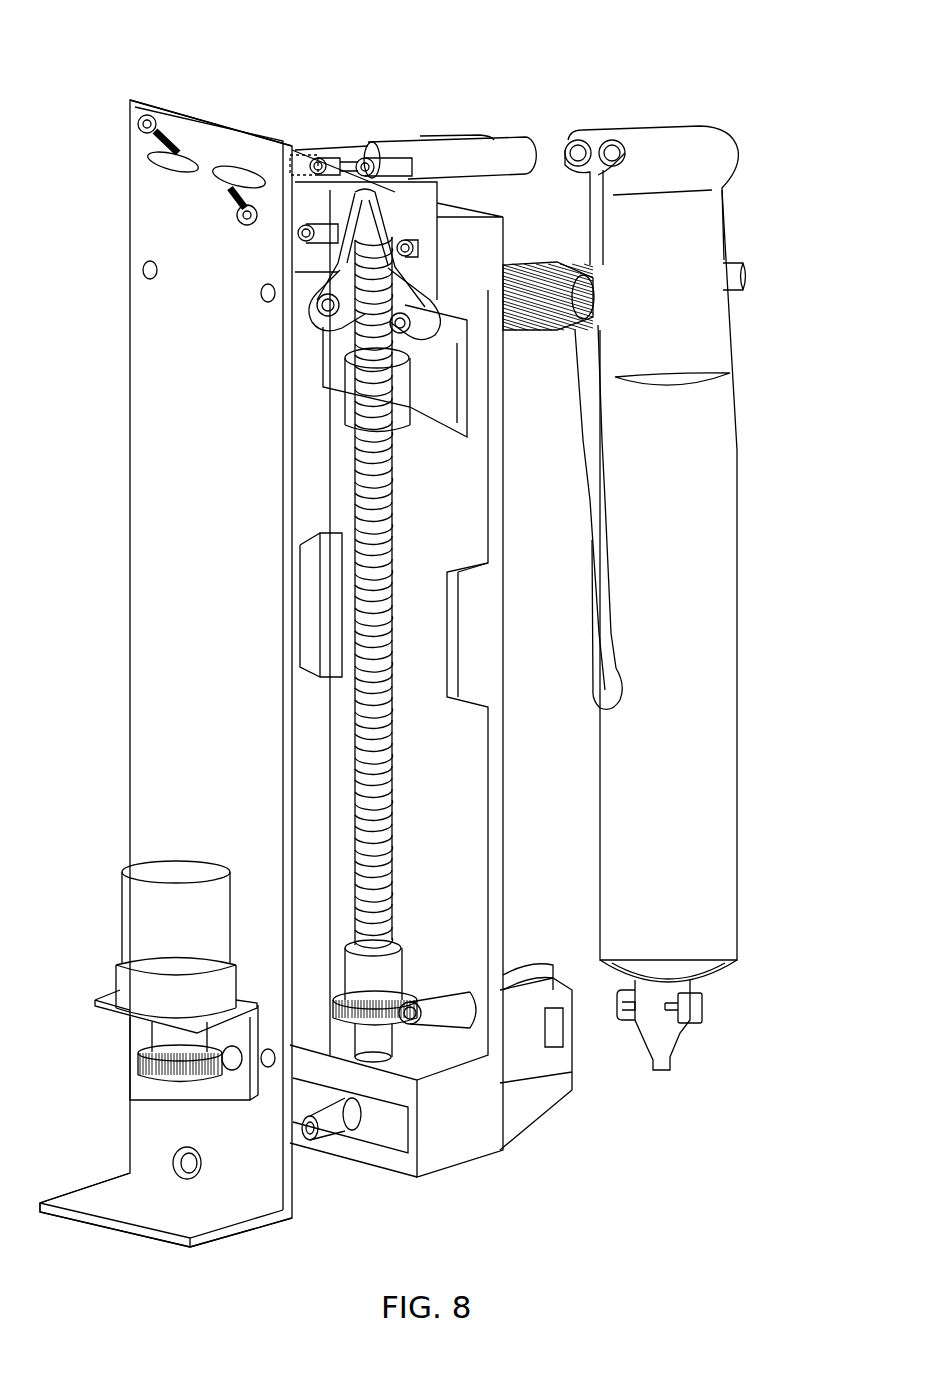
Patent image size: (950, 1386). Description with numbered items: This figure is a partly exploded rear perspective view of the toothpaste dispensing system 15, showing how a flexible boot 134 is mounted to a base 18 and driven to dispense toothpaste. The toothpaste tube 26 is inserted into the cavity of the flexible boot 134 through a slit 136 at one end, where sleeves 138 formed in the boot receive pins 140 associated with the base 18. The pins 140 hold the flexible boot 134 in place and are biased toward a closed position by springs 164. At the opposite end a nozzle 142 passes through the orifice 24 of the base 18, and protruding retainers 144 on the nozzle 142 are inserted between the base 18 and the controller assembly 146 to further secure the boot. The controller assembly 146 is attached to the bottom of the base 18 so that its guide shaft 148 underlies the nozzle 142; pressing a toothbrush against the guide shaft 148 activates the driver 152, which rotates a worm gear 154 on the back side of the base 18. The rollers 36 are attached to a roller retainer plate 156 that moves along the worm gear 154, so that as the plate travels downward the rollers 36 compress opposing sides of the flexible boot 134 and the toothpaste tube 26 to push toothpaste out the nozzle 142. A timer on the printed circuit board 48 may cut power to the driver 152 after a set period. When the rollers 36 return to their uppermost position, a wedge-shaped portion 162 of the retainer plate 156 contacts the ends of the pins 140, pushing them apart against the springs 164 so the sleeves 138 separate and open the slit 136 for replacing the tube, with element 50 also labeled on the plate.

The toothpaste dispensing system 15 is at (76, 66).
The base 18 is at (477, 857).
The orifice 24 is at (516, 967).
The toothpaste tube 26 is at (737, 322).
The rollers 36 is at (540, 308).
The printed circuit board 48 is at (205, 445).
The mounting plate flange 50 is at (166, 1210).
The flexible boot 134 is at (713, 856).
The slit 136 is at (598, 630).
The sleeves 138 is at (598, 130).
The pins 140 is at (437, 137).
The nozzle 142 is at (668, 1048).
The protruding retainers 144 is at (698, 1003).
The controller assembly 146 is at (589, 1084).
The guide shaft 148 is at (327, 1130).
The driver 152 is at (138, 925).
The worm gear 154 is at (393, 770).
The roller retainer plate 156 is at (423, 395).
The wedge-shaped portion 162 is at (317, 172).
The springs 164 is at (152, 165).